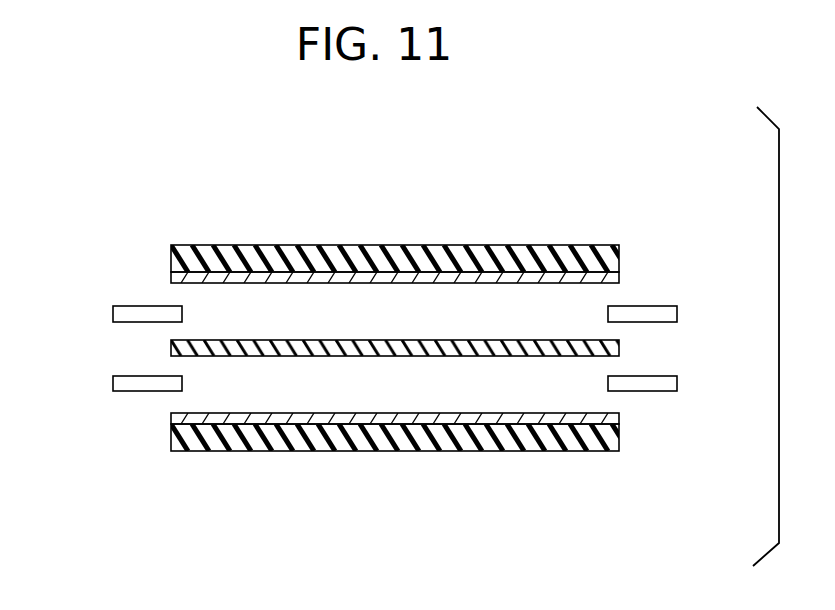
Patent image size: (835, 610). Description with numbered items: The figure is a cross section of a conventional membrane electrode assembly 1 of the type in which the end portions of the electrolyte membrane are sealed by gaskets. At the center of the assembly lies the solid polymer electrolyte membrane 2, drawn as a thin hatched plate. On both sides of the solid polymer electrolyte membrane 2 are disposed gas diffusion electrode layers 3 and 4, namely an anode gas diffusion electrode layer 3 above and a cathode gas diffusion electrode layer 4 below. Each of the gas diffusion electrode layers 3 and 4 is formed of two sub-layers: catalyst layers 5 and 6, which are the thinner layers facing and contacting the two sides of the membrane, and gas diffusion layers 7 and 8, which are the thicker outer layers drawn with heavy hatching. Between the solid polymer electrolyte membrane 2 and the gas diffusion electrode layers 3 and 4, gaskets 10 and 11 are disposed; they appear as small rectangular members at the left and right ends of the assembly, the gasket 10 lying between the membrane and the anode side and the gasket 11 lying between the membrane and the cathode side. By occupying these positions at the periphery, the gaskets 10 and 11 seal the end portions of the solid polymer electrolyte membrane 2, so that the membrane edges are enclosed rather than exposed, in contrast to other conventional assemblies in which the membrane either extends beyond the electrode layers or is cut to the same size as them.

The membrane electrode assembly 1 is at (668, 250).
The solid polymer electrolyte membrane 2 is at (540, 346).
The anode gas diffusion electrode layer 3 is at (385, 167).
The cathode gas diffusion electrode layer 4 is at (452, 511).
The catalyst layer 5 is at (442, 279).
The catalyst layer 6 is at (436, 421).
The gas diffusion layer 7 is at (388, 266).
The gas diffusion layer 8 is at (389, 440).
The gasket 10 is at (112, 313).
The gasket 11 is at (112, 384).